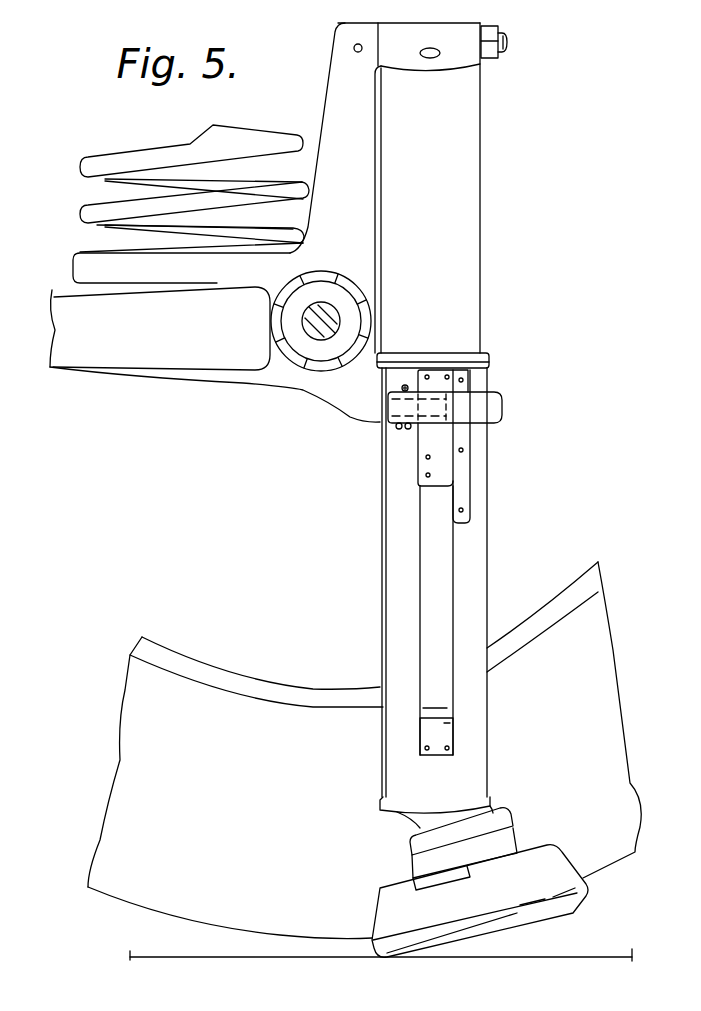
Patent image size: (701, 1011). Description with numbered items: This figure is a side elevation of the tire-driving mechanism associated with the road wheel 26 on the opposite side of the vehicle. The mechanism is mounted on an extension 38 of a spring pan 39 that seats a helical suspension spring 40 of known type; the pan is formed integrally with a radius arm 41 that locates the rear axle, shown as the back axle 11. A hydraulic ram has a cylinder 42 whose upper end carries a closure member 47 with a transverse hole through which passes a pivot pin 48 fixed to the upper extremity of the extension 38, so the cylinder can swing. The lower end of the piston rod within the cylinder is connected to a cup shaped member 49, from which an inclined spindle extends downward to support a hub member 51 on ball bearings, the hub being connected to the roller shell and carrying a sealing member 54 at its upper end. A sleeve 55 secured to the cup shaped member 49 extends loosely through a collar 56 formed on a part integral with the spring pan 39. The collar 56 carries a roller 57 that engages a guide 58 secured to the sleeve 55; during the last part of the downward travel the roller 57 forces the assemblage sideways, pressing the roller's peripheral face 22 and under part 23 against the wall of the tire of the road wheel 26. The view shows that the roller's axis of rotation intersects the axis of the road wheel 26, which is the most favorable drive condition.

The back axle 11 is at (333, 274).
The peripheral face of the roller 22 is at (568, 862).
The under part of the roller 23 is at (577, 913).
The road wheel 26 is at (293, 685).
The extension 38 is at (328, 102).
The spring pan 39 is at (73, 257).
The helical suspension spring 40 is at (172, 150).
The radius arm 41 is at (118, 370).
The cylinder 42 is at (470, 230).
The closure member 47 is at (427, 64).
The pivot pin 48 is at (503, 57).
The cup shaped member 49 is at (485, 806).
The hub member 51 is at (413, 870).
The sealing member 54 is at (408, 843).
The sleeve 55 is at (484, 475).
The collar 56 is at (497, 424).
The roller 57 is at (477, 384).
The guide 58 is at (422, 677).